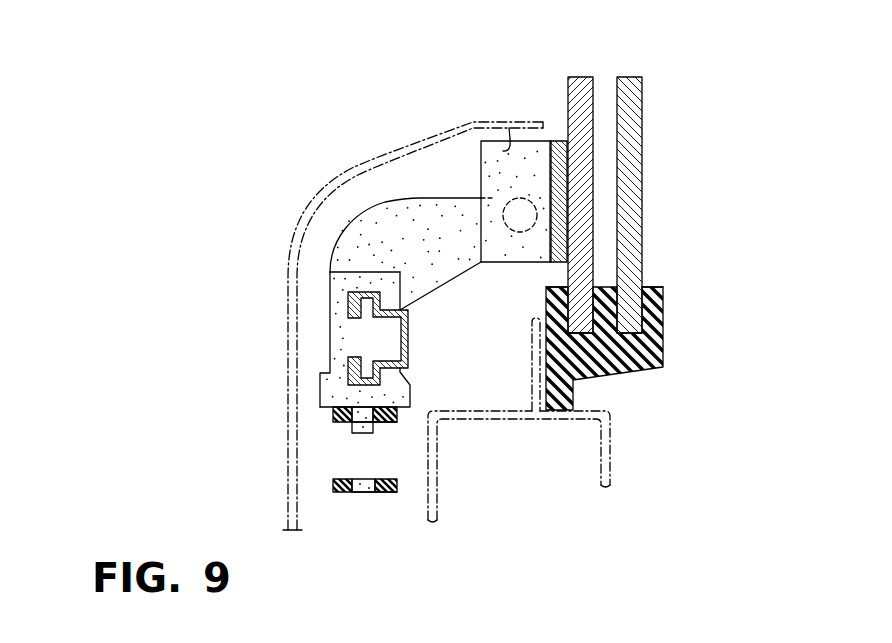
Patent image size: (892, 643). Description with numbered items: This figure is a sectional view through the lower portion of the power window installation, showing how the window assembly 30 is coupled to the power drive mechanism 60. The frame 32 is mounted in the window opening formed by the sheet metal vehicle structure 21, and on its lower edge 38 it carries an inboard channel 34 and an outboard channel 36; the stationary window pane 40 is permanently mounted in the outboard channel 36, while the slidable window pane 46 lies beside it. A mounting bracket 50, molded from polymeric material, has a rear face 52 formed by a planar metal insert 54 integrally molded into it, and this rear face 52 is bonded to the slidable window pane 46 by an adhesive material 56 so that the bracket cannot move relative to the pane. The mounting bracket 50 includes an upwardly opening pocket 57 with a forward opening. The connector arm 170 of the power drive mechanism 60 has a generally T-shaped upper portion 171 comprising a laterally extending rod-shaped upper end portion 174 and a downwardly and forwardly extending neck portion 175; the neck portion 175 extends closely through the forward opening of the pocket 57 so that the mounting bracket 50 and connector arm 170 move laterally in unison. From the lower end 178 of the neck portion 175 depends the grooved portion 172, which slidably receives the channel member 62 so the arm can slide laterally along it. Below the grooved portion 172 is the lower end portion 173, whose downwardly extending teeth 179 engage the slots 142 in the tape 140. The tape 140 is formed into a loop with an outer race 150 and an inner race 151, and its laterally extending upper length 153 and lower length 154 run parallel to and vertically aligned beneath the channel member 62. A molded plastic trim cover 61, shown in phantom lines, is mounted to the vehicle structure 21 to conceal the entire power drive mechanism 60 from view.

The vehicle structure 21 is at (510, 421).
The window assembly 30 is at (612, 208).
The frame 32 is at (612, 327).
The inboard channel 34 is at (570, 292).
The outboard channel 36 is at (636, 300).
The lower edge 38 is at (557, 289).
The first stationary window pane 40 is at (634, 116).
The first slidable window pane 46 is at (570, 174).
The mounting bracket 50 is at (506, 134).
The rear face 52 is at (627, 134).
The planar metal insert 54 is at (556, 236).
The adhesive material 56 is at (564, 166).
The upwardly opening pocket 57 is at (509, 128).
The power drive mechanism 60 is at (358, 295).
The trim cover 61 is at (397, 158).
The channel member 62 is at (408, 338).
The tape 140 is at (395, 494).
The slots 142 is at (373, 413).
The outer race 150 is at (338, 407).
The inner race 151 is at (334, 420).
The upper length 153 is at (397, 423).
The lower length 154 is at (379, 493).
The connector arm 170 is at (329, 234).
The T-shaped upper portion 171 is at (422, 204).
The grooved portion 172 is at (449, 216).
The lower end portion 173 is at (335, 387).
The rod-shaped upper end portion 174 is at (521, 212).
The neck portion 175 is at (392, 228).
The lower end of neck portion 178 is at (353, 253).
The teeth 179 is at (357, 431).